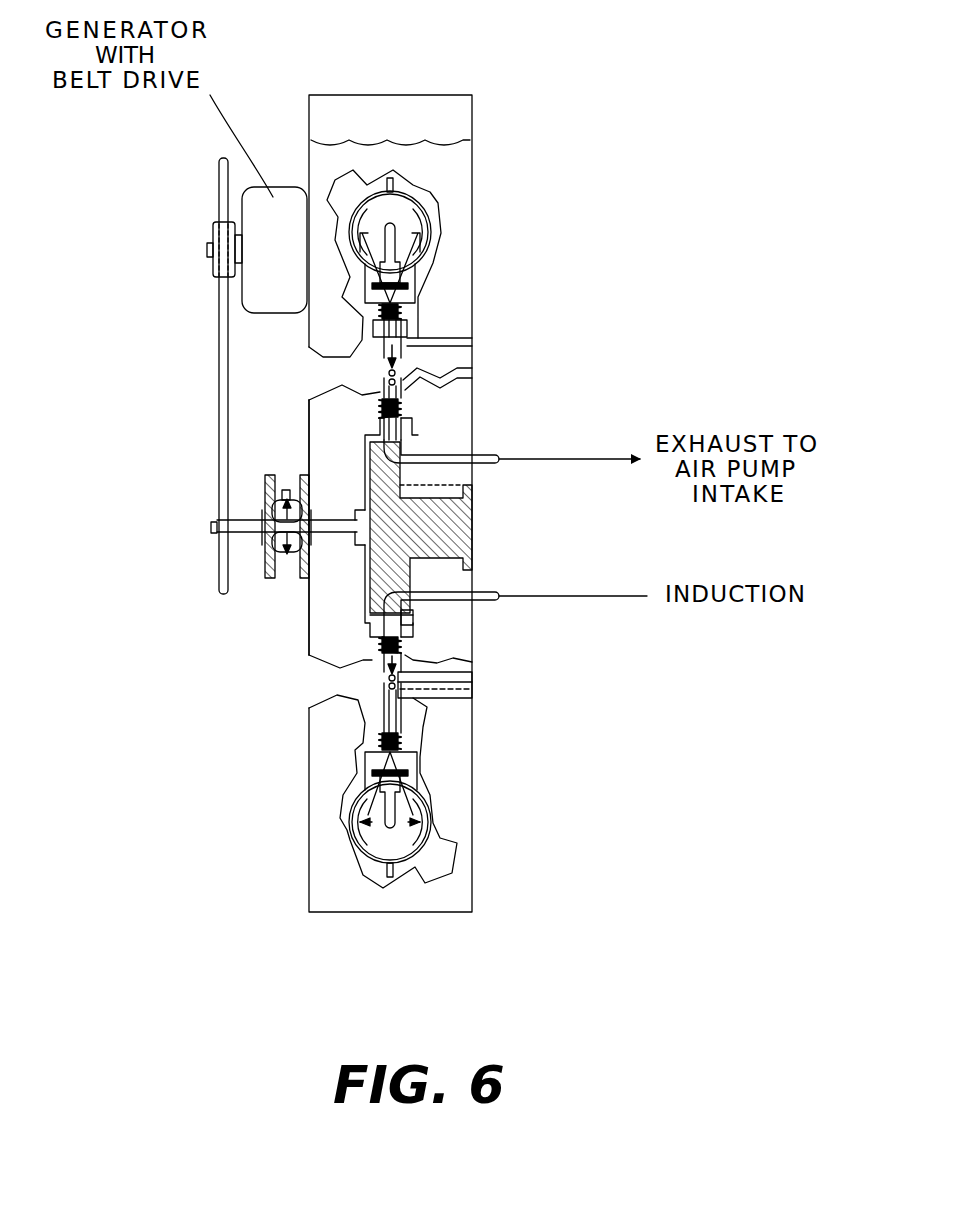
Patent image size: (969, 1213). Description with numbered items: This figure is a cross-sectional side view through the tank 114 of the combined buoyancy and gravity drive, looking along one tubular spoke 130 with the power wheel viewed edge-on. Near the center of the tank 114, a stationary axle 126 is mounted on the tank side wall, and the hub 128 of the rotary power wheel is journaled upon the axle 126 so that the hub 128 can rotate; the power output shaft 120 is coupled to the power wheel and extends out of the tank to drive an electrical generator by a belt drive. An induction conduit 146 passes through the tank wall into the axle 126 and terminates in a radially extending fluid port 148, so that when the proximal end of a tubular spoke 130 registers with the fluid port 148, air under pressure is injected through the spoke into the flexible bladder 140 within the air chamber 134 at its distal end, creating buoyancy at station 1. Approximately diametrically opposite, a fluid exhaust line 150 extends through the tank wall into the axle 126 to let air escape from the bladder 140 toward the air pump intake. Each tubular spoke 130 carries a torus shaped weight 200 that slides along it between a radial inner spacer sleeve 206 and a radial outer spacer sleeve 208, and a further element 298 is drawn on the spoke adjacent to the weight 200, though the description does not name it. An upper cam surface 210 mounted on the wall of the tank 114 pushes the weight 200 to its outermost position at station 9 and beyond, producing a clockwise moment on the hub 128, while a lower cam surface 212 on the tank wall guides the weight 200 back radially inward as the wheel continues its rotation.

The station 9 is at (349, 203).
The station 1 is at (443, 869).
The tank 114 is at (443, 200).
The flexible bladder 140 is at (396, 238).
The upper spring 298 is at (400, 305).
The torus shaped weight 200 is at (408, 322).
The upper cam surface 210 is at (447, 337).
The tubular spoke 130 is at (385, 372).
The power output shaft 120 is at (367, 430).
The radial inner spacer sleeve 206 is at (400, 403).
The fluid exhaust line 150 is at (495, 455).
The axle 126 is at (458, 542).
The induction conduit 146 is at (497, 595).
The fluid port 148 is at (413, 630).
The hub 128 is at (363, 598).
The lower cam surface 212 is at (445, 678).
The radial outer spacer sleeve 208 is at (400, 744).
The air chamber 134 is at (387, 855).